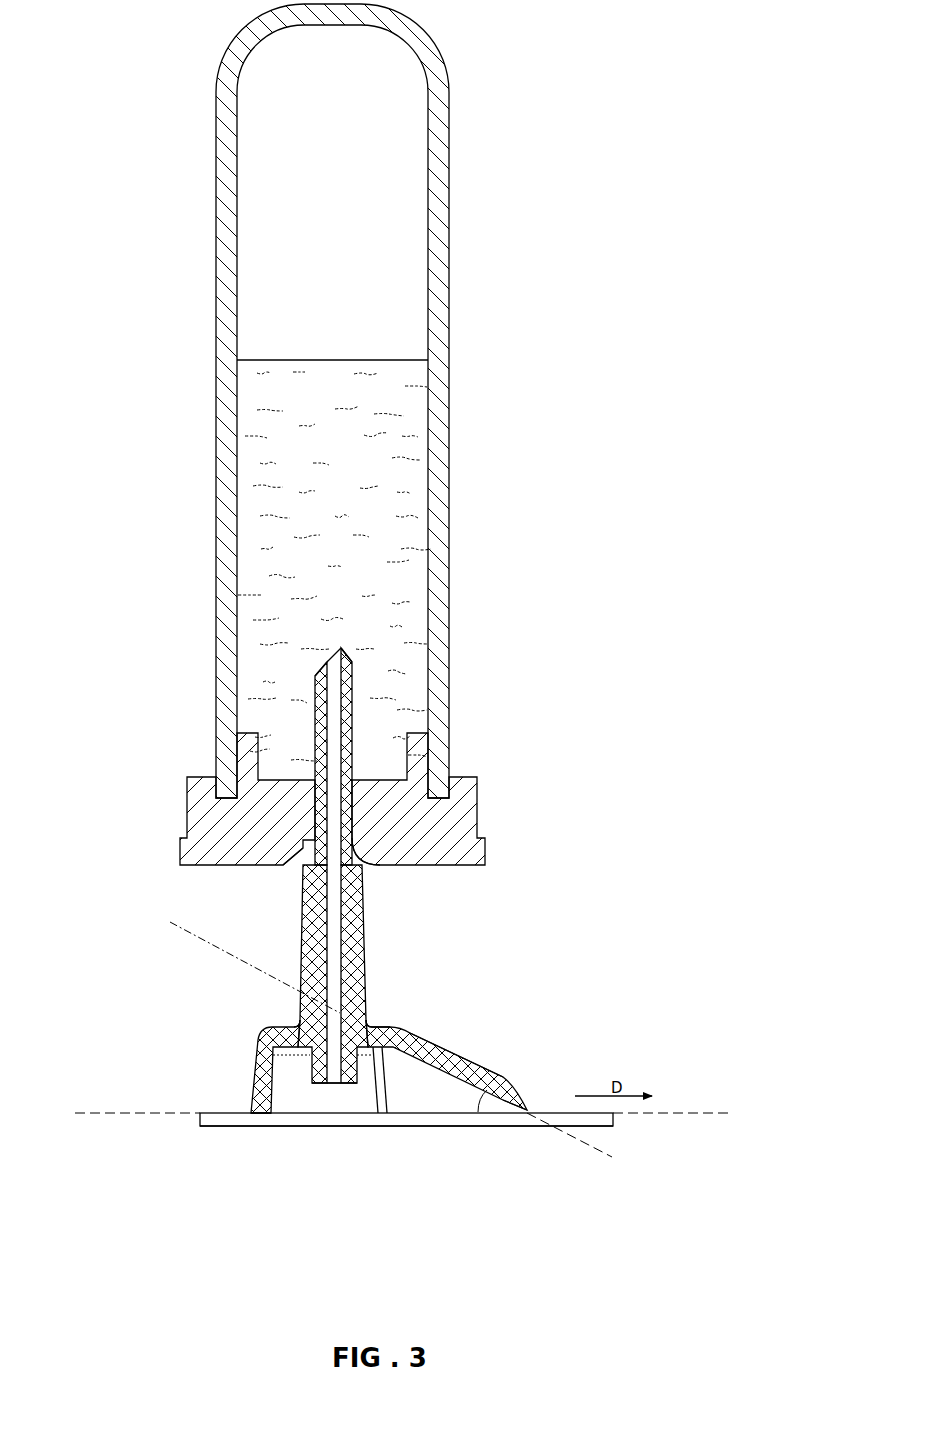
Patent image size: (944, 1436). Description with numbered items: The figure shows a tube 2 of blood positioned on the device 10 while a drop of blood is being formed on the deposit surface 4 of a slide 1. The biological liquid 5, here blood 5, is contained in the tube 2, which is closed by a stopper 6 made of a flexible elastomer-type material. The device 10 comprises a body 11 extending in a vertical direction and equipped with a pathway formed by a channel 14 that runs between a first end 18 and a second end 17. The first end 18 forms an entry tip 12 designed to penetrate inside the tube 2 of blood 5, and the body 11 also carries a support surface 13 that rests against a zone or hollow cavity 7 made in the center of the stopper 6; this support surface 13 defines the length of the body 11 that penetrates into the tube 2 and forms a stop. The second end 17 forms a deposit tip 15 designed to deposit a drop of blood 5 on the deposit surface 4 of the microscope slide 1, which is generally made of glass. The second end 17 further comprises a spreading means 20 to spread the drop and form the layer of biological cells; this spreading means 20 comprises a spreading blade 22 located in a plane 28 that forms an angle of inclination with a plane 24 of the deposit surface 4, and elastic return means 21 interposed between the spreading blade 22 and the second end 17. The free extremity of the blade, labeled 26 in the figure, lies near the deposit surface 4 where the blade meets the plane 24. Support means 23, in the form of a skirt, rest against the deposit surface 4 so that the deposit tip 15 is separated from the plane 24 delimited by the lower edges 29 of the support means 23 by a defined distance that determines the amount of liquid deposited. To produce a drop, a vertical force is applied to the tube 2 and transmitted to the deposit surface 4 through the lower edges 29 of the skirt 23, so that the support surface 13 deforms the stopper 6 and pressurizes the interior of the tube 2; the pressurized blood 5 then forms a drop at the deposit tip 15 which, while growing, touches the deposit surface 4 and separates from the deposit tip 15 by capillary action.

The slide 1 is at (240, 1116).
The tube 2 is at (449, 174).
The deposit surface 4 is at (217, 1112).
The biological liquid 5 is at (410, 487).
The stopper 6 is at (187, 807).
The hollow cavity 7 is at (292, 866).
The device 10 is at (444, 989).
The body 11 is at (371, 931).
The entry tip 12 is at (320, 674).
The support surface 13 is at (357, 842).
The channel 14 is at (333, 743).
The deposit tip 15 is at (310, 1085).
The second end 17 is at (280, 1021).
The first end 18 is at (354, 694).
The spreading means 20 is at (506, 1044).
The elastic return means 21 is at (393, 1028).
The spreading blade 22 is at (507, 1077).
The support means 23 is at (262, 1031).
The plane 24 is at (692, 1114).
The arm tip 26 is at (526, 1114).
The plane 28 is at (586, 1143).
The lower edges 29 is at (256, 1114).